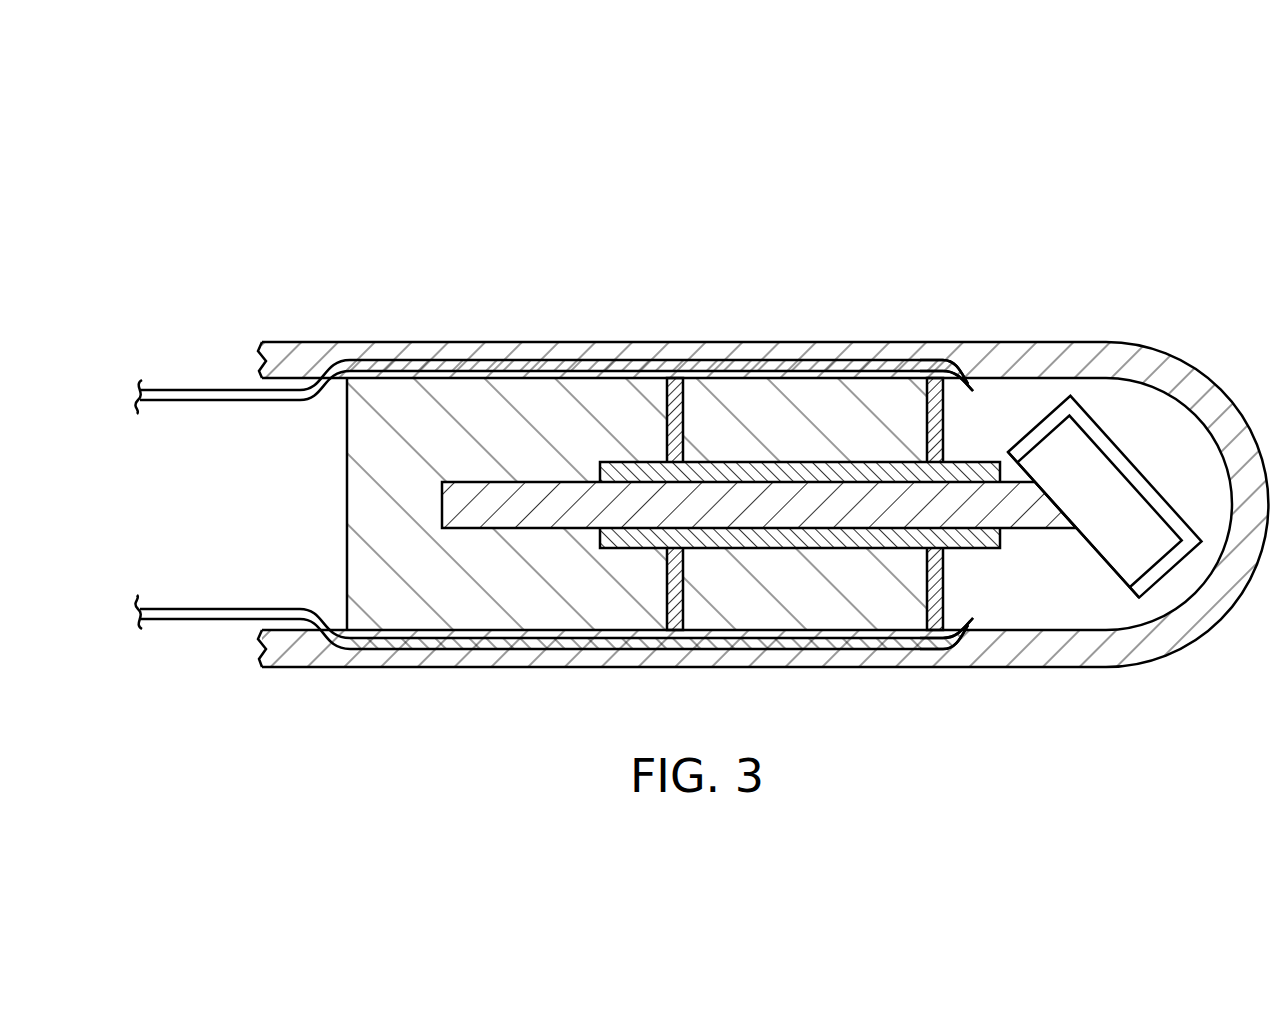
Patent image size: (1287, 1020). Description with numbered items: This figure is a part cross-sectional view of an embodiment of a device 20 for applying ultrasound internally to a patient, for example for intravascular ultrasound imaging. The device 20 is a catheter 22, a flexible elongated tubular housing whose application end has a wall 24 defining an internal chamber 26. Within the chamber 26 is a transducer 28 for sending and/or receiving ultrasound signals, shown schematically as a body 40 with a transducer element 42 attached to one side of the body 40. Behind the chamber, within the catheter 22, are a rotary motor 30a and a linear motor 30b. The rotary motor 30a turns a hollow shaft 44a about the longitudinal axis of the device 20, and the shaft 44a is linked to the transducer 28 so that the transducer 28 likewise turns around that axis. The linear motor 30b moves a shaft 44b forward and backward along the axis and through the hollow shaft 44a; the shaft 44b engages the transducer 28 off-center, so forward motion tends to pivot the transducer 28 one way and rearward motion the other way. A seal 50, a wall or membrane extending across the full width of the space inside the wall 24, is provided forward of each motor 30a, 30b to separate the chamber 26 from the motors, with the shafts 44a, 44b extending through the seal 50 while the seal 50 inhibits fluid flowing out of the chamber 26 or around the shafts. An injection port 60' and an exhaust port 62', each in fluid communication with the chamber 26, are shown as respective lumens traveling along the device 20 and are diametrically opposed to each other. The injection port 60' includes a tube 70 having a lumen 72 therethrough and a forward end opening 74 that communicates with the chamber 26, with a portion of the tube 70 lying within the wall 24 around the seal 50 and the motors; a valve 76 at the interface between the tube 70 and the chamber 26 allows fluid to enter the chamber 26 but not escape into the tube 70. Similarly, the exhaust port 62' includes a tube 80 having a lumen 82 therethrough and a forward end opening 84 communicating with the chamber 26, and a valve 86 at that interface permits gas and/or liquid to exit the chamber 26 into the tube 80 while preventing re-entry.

The device 20 is at (709, 186).
The catheter 22 is at (596, 326).
The wall 24 is at (1098, 352).
The internal chamber 26 is at (1144, 410).
The transducer 28 is at (1144, 522).
The rotary motor 30a is at (790, 396).
The linear motor 30b is at (471, 396).
The body 40 is at (1121, 456).
The transducer element 42 is at (1125, 564).
The hollow shaft 44a is at (792, 540).
The shaft 44b is at (531, 517).
The seal 50 is at (690, 378).
The injection port 60' is at (948, 711).
The exhaust port 62' is at (948, 298).
The tube 70 is at (188, 620).
The lumen 72 is at (428, 645).
The forward end opening 74 is at (974, 622).
The valve 76 is at (966, 648).
The tube 80 is at (188, 390).
The lumen 82 is at (428, 362).
The forward end opening 84 is at (971, 392).
The valve 86 is at (963, 372).